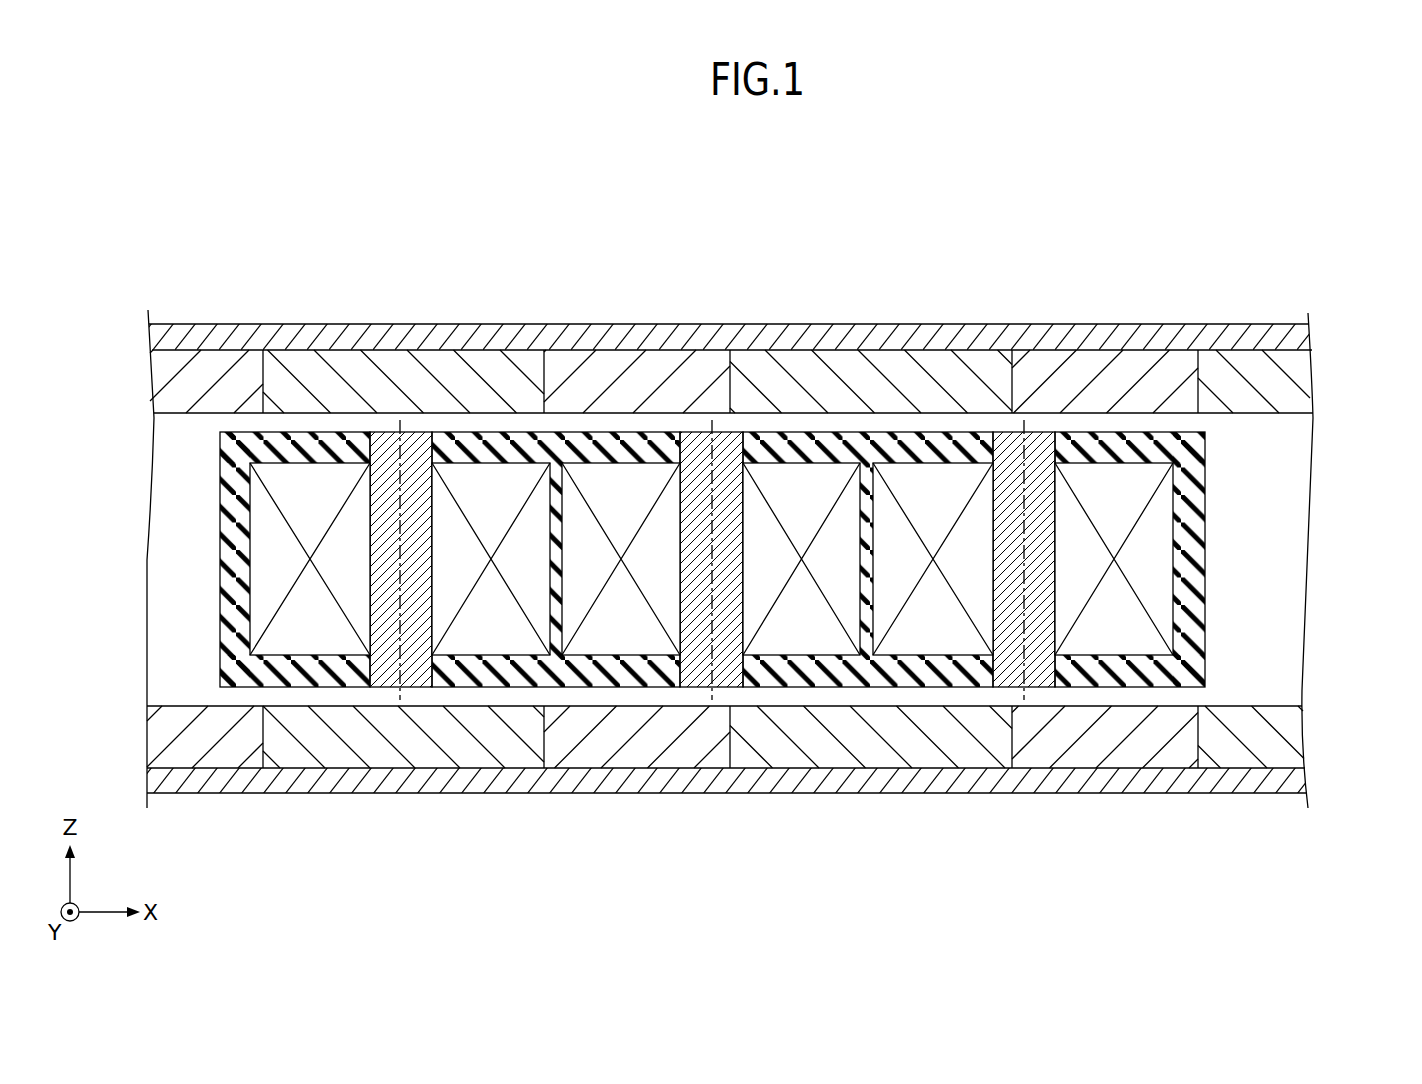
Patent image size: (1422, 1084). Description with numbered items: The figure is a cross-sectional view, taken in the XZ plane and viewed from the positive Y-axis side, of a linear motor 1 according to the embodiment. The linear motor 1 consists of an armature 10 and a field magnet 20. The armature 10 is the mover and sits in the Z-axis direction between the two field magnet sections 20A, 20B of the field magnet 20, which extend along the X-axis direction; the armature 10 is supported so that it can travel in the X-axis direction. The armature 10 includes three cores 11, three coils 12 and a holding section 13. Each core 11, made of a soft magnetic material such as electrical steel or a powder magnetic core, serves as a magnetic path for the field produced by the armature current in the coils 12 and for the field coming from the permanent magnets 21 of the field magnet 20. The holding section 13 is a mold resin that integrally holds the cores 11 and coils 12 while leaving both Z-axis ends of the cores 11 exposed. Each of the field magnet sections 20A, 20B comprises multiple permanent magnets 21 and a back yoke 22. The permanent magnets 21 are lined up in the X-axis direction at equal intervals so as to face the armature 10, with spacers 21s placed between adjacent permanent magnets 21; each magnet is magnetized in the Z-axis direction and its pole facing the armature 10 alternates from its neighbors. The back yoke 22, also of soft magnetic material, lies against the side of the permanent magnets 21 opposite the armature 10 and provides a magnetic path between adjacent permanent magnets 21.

The linear motor 1 is at (113, 196).
The armature 10 is at (192, 562).
The core 11 is at (387, 445).
The coil 12 is at (467, 846).
The holding section 13 is at (792, 445).
The field magnet 20 is at (1378, 450).
The field magnet section 20A is at (1265, 438).
The field magnet section 20B is at (1265, 689).
The permanent magnet 21 is at (401, 367).
The spacer 21s is at (193, 362).
The back yoke 22 is at (543, 333).